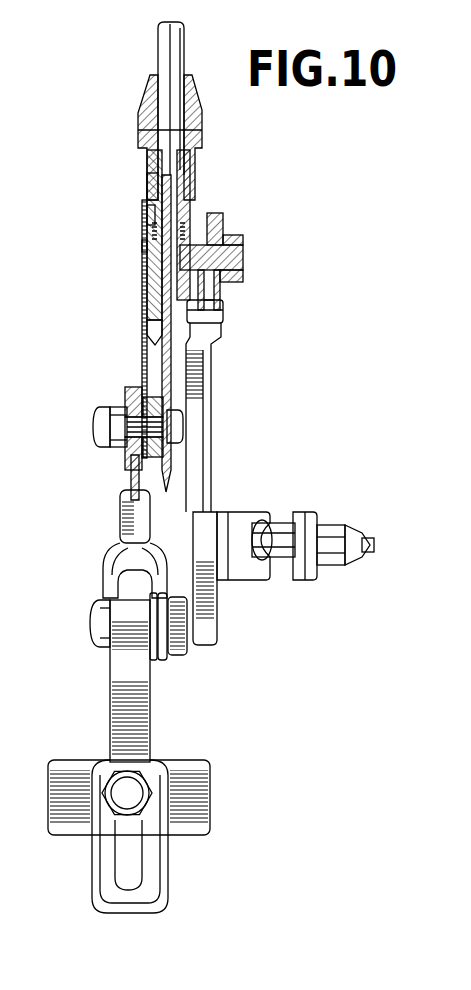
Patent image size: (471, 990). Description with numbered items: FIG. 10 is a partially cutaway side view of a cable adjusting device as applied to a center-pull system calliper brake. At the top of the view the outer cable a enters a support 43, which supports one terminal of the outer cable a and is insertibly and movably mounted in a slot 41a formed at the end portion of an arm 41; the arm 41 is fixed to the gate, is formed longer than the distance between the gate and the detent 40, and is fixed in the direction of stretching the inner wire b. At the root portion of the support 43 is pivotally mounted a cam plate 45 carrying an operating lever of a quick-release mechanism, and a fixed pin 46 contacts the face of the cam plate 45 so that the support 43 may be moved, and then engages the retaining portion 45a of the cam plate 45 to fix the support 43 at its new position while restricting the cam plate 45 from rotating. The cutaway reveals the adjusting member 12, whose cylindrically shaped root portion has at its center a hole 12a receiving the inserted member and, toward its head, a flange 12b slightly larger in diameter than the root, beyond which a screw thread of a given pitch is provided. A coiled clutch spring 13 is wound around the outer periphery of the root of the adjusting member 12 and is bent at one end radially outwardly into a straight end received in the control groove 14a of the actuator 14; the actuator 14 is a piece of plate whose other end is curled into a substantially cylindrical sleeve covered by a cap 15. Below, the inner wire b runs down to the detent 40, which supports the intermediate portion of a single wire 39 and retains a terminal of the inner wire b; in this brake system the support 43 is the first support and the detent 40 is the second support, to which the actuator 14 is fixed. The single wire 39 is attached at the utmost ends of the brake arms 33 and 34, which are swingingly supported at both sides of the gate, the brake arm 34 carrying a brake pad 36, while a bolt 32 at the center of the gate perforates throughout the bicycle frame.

The outer cable a is at (185, 50).
The inner wire b is at (170, 372).
The adjusting member 12 is at (152, 292).
The hole 12a is at (147, 175).
The flange 12b is at (147, 215).
The clutch spring 13 is at (150, 238).
The actuator 14 is at (142, 332).
The control groove 14a is at (142, 245).
The cap 15 is at (138, 125).
The bolt 32 is at (282, 500).
The brake arm 33 is at (110, 683).
The brake arm 34 is at (120, 520).
The brake pad 36 is at (77, 767).
The single wire 39 is at (132, 478).
The detent 40 is at (127, 455).
The arm 41 is at (197, 442).
The slot 41a is at (220, 292).
The support 43 is at (195, 240).
The cam plate 45 is at (225, 222).
The retaining portion 45a is at (230, 235).
The fixed pin 46 is at (223, 313).